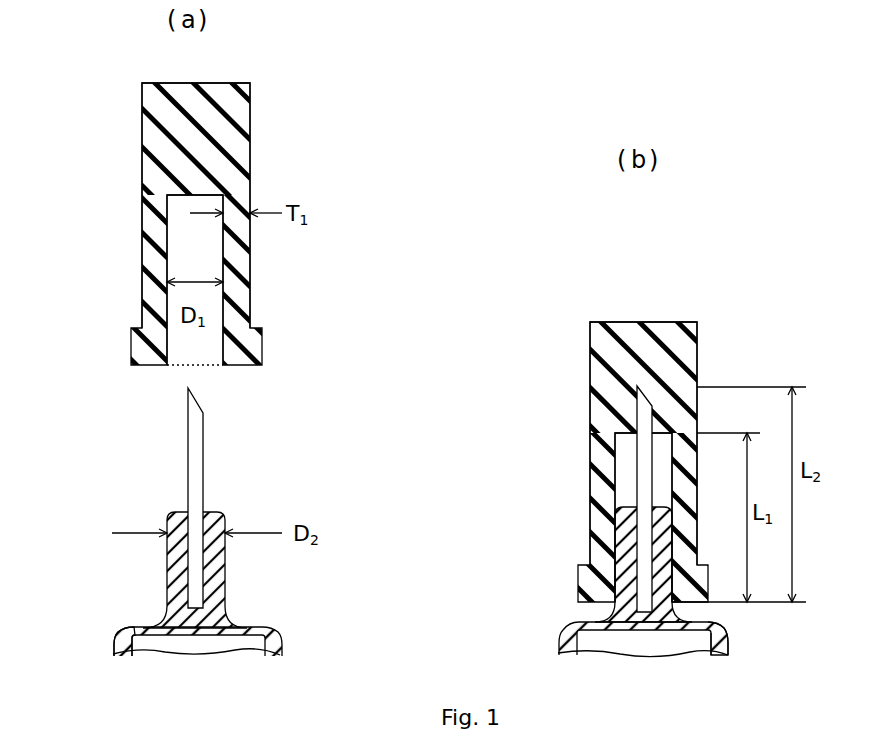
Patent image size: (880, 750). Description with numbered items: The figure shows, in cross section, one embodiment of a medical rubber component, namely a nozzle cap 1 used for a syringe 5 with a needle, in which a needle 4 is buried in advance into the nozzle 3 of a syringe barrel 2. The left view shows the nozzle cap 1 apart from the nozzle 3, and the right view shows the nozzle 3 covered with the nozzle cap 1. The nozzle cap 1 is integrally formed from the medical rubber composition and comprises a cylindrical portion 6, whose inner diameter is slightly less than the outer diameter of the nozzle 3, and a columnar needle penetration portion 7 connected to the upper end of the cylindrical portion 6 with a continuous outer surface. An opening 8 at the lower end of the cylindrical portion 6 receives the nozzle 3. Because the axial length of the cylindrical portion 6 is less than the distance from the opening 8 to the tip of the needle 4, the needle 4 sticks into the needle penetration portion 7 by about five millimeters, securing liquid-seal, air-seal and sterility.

The nozzle cap 1 is at (258, 112).
The syringe barrel 2 is at (272, 628).
The nozzle 3 is at (222, 589).
The needle 4 is at (188, 440).
The syringe 5 is at (113, 633).
The cylindrical portion 6 is at (142, 232).
The needle penetration portion 7 is at (142, 138).
The opening 8 is at (207, 365).